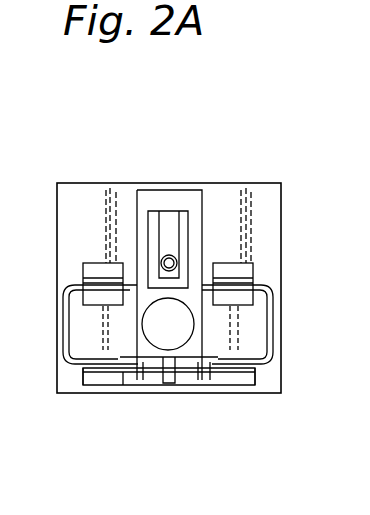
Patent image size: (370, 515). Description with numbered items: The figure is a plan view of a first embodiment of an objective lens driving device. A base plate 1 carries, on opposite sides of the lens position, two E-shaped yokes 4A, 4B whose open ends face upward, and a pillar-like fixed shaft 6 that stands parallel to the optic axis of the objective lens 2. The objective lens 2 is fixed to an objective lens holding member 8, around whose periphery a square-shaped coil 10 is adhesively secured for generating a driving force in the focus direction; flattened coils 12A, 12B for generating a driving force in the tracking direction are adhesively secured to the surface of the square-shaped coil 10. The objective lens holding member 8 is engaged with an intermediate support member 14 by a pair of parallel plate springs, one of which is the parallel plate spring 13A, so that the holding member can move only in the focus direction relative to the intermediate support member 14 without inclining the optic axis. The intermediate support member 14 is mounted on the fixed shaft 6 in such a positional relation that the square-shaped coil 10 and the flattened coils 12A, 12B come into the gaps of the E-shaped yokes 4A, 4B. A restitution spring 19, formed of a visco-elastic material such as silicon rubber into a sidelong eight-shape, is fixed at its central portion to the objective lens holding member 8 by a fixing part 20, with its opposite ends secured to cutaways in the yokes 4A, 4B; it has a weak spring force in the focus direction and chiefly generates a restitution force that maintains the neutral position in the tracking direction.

The base plate 1 is at (263, 232).
The objective lens 2 is at (158, 342).
The E-shaped yoke 4A is at (243, 270).
The E-shaped yoke 4B is at (102, 268).
The fixed shaft 6 is at (163, 258).
The objective lens holding member 8 is at (250, 324).
The square-shaped coil 10 is at (266, 351).
The flattened coil 12A is at (257, 374).
The flattened coil 12B is at (83, 370).
The parallel plate spring 13A is at (198, 247).
The intermediate support member 14 is at (168, 232).
The restitution spring 19 is at (197, 378).
The fixing part 20 is at (167, 384).